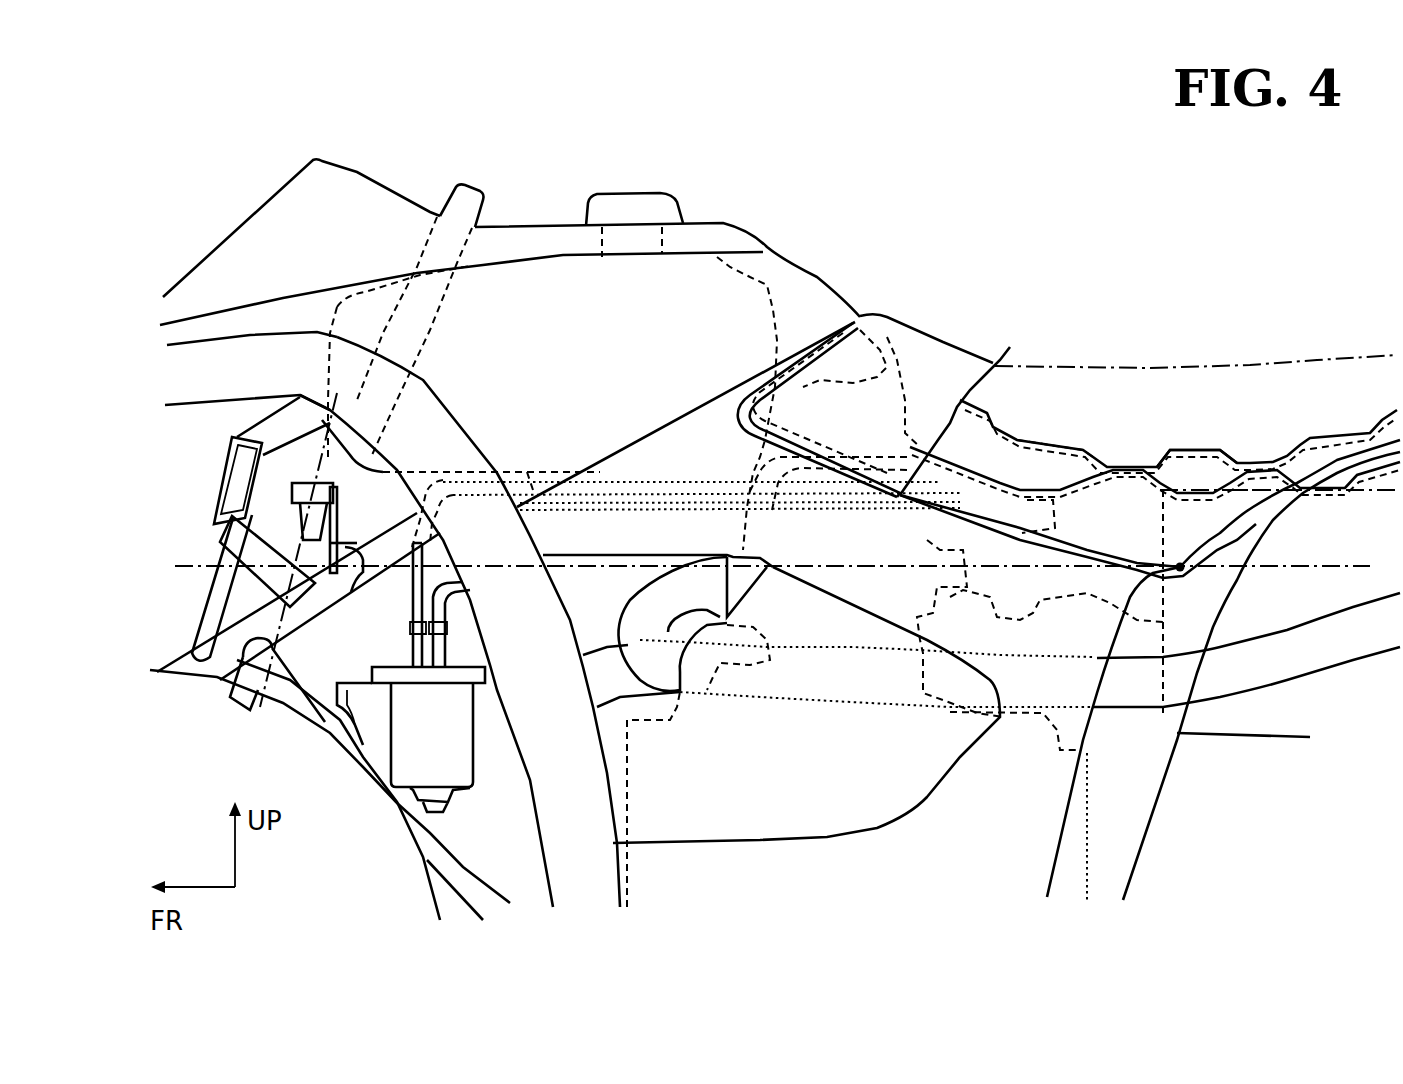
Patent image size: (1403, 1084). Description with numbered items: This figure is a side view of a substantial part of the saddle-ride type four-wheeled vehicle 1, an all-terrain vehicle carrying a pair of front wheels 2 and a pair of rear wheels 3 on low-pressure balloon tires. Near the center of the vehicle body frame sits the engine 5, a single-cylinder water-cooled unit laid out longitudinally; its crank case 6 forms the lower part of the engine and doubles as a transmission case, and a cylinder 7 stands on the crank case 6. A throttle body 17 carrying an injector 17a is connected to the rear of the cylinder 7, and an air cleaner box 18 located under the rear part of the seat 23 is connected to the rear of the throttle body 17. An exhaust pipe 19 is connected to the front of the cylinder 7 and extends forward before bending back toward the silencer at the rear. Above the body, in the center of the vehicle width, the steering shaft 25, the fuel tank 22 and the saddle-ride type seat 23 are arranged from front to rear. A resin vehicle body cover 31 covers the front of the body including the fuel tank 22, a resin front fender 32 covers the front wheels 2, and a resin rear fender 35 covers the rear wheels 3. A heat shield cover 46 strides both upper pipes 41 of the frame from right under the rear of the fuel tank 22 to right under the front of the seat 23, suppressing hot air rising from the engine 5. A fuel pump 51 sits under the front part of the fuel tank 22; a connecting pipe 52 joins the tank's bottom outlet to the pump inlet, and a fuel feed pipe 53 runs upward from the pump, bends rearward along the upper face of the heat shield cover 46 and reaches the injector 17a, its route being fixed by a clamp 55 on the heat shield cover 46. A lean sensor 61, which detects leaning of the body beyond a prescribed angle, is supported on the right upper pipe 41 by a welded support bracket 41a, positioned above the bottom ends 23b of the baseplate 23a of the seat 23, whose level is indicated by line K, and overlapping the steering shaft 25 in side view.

The saddle-ride type four-wheeled vehicle 1 is at (1032, 262).
The front wheels 2 is at (440, 890).
The rear wheels 3 is at (1273, 783).
The engine 5 is at (1095, 790).
The crank case 6 is at (987, 690).
The cylinder 7 is at (950, 640).
The throttle body 17 is at (1057, 537).
The injector 17a is at (1022, 513).
The air cleaner box 18 is at (1255, 490).
The exhaust pipe 19 is at (583, 666).
The fuel tank 22 is at (770, 283).
The seat 23 is at (945, 340).
The baseplate 23a is at (1203, 447).
The bottom ends 23b is at (1183, 572).
The steering shaft 25 is at (452, 189).
The vehicle body cover 31 is at (250, 208).
The front fender 32 is at (285, 330).
The rear fender 35 is at (1067, 803).
The upper pipe 41 is at (237, 622).
The support bracket 41a is at (351, 592).
The heat shield cover 46 is at (613, 460).
The fuel pump 51 is at (473, 760).
The connecting pipe 52 is at (465, 581).
The fuel feed pipe 53 is at (667, 457).
The clamp 55 is at (713, 473).
The lean sensor 61 is at (222, 483).
The line K is at (188, 565).